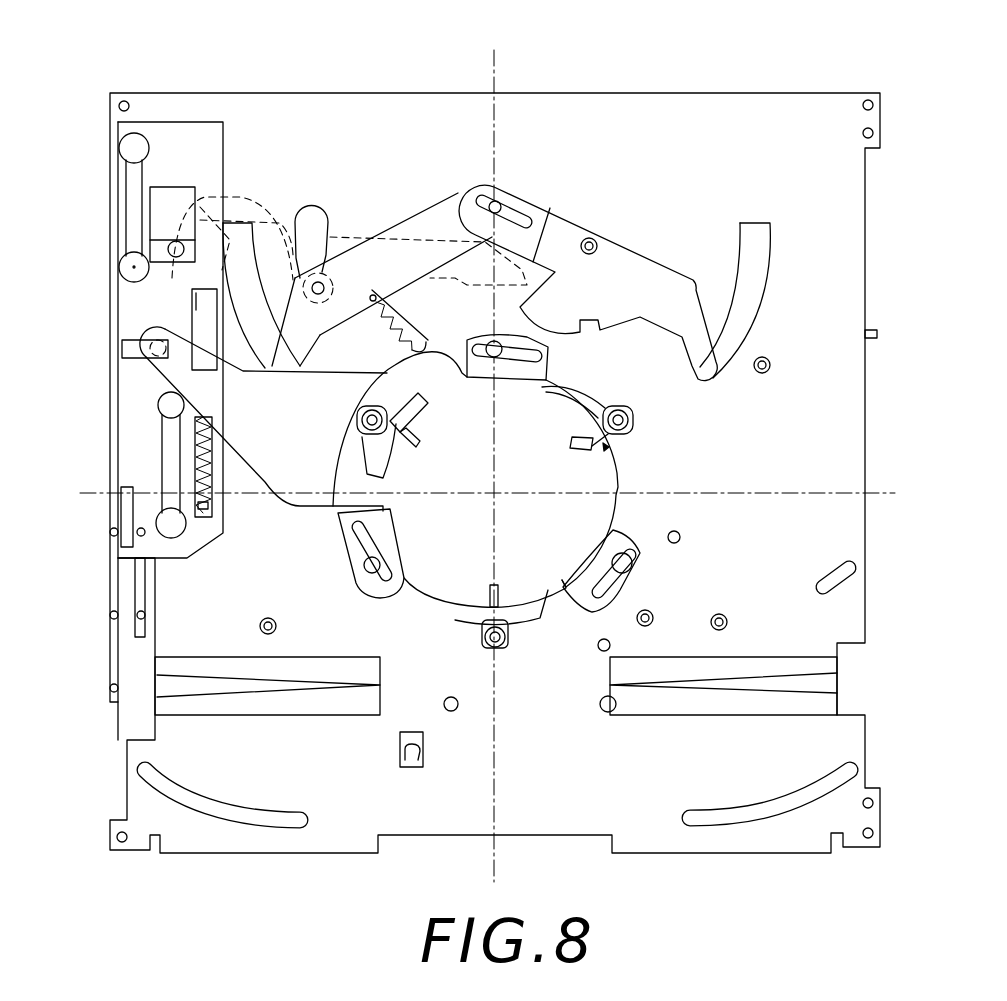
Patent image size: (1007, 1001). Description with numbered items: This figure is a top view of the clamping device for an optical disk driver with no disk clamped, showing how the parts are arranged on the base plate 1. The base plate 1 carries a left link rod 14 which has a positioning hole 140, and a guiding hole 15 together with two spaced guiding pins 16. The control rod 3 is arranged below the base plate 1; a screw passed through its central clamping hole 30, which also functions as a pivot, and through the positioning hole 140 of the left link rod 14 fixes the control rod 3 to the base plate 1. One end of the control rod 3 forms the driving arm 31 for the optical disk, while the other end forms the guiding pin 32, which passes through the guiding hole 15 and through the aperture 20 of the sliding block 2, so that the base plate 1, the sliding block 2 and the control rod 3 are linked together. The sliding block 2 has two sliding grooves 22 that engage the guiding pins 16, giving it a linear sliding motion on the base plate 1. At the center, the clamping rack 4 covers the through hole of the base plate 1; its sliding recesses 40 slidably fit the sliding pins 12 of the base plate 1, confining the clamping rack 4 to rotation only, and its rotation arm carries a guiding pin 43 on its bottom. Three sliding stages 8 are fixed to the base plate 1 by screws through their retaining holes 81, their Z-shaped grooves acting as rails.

The base plate 1 is at (735, 118).
The sliding block 2 is at (143, 415).
The control rod 3 is at (428, 247).
The clamping rack 4 is at (580, 477).
The sliding stage 8 is at (592, 412).
The sliding pin 12 is at (620, 566).
The left link rod 14 is at (450, 222).
The guiding hole for control rod 15 is at (160, 255).
The guiding pin 16 is at (125, 267).
The aperture 20 is at (210, 335).
The sliding groove 22 is at (132, 214).
The clamping hole 30 is at (362, 240).
The driving arm 31 is at (515, 288).
The guiding pin for control rod 32 is at (158, 195).
The sliding recess 40 is at (623, 597).
The guiding pin for clamping rack 43 is at (122, 348).
The retaining hole 81 is at (630, 414).
The positioning hole 140 is at (318, 282).